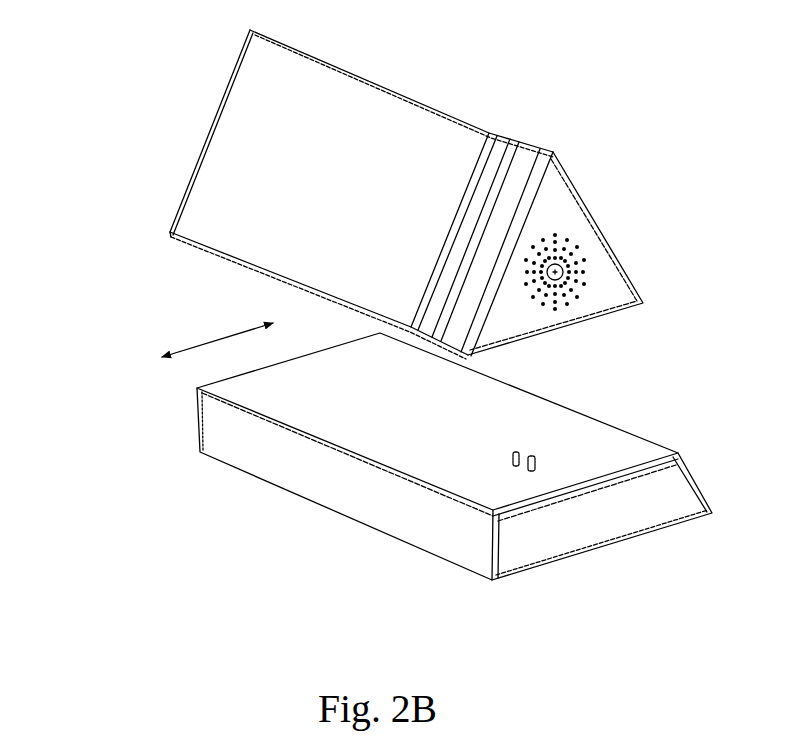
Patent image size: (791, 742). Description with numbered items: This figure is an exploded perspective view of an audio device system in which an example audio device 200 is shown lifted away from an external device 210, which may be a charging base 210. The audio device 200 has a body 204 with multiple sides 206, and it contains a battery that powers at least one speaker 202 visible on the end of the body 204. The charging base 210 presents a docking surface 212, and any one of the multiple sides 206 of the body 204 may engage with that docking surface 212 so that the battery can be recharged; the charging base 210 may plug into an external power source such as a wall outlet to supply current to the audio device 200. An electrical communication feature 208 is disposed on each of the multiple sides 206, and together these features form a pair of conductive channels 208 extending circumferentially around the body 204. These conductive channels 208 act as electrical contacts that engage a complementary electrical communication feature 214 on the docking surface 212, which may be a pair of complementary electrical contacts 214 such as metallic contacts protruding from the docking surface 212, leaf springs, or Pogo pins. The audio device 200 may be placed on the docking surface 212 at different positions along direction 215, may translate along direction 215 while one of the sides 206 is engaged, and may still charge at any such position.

The audio device 200 is at (105, 75).
The speaker 202 is at (590, 250).
The body 204 is at (183, 168).
The sides 206 is at (372, 73).
The electrical communication feature 208 is at (518, 165).
The external device 210 is at (600, 415).
The docking surface 212 is at (375, 407).
The complementary electrical communication feature 214 is at (537, 462).
The direction 215 is at (208, 342).